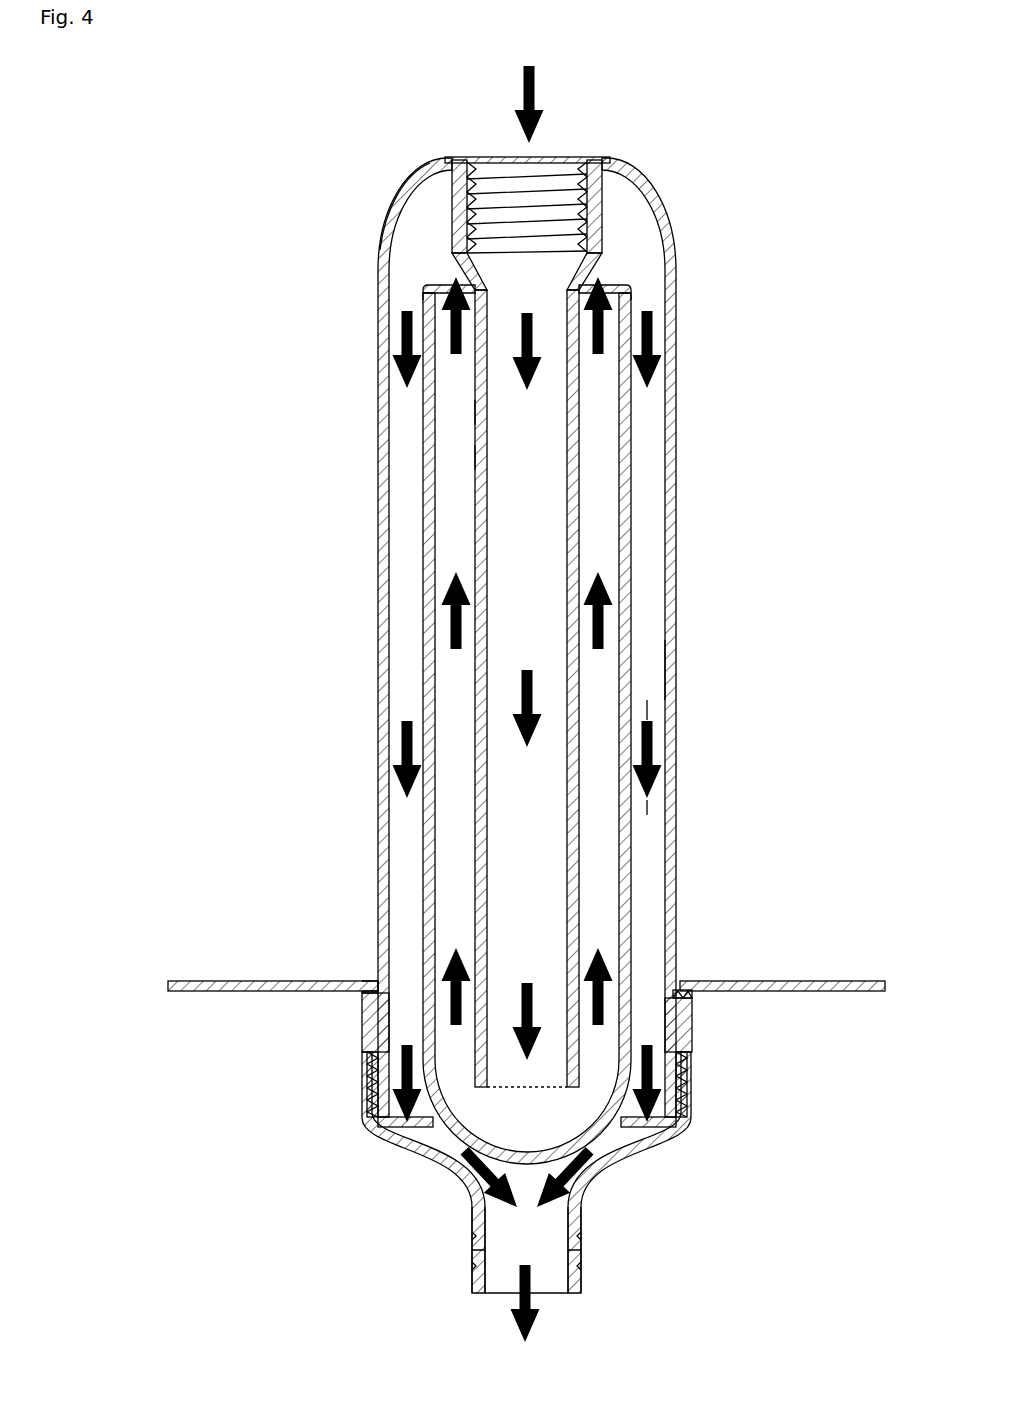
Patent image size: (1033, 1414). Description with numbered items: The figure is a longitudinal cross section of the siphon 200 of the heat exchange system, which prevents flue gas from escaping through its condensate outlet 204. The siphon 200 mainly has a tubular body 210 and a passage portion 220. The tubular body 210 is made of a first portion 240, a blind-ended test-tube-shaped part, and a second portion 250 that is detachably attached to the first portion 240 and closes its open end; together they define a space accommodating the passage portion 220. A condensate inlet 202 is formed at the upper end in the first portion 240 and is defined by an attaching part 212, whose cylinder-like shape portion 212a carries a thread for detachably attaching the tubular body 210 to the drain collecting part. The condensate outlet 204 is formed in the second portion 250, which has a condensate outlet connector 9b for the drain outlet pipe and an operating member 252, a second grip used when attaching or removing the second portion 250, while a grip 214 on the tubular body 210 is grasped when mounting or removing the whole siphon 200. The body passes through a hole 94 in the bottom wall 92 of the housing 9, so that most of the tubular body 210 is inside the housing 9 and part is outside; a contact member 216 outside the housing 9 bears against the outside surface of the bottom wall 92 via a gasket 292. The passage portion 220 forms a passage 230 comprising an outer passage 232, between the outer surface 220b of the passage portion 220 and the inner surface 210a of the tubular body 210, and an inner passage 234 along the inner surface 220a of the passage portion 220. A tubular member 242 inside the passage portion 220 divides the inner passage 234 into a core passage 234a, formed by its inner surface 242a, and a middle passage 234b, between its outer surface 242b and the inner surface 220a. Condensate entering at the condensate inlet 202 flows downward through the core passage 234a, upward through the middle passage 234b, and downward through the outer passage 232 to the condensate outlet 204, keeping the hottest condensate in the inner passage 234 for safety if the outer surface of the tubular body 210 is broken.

The siphon 200 is at (745, 200).
The condensate inlet 202 is at (565, 158).
The condensate outlet 204 is at (582, 1285).
The tubular body 210 is at (823, 857).
The inner surface of the tubular body 210a is at (676, 670).
The attaching part 212 is at (492, 152).
The cylinder-like shape portion 212a is at (445, 203).
The grip 214 is at (358, 1025).
The contact member 216 is at (700, 995).
The passage portion 220 is at (637, 630).
The inner surface of the passage portion 220a is at (605, 700).
The outer surface of the passage portion 220b is at (635, 818).
The passage 230 is at (857, 487).
The outer passage 232 is at (642, 570).
The inner passage 234 is at (857, 521).
The core passage 234a is at (533, 498).
The middle passage 234b is at (600, 528).
The first portion 240 is at (678, 853).
The tubular member 242 is at (582, 428).
The inner surface of the tubular member 242a is at (503, 412).
The outer surface of the tubular member 242b is at (480, 455).
The second portion 250 is at (697, 1075).
The operating member 252 is at (358, 1079).
The housing 9 is at (212, 970).
The bottom wall 92 is at (265, 981).
The hole 94 is at (377, 981).
The gasket 292 is at (362, 993).
The condensate outlet connector 9b is at (472, 1252).